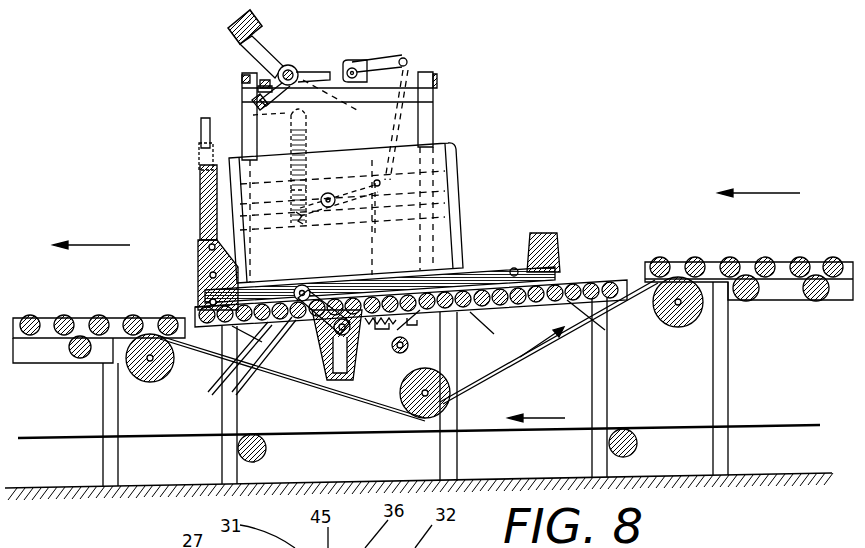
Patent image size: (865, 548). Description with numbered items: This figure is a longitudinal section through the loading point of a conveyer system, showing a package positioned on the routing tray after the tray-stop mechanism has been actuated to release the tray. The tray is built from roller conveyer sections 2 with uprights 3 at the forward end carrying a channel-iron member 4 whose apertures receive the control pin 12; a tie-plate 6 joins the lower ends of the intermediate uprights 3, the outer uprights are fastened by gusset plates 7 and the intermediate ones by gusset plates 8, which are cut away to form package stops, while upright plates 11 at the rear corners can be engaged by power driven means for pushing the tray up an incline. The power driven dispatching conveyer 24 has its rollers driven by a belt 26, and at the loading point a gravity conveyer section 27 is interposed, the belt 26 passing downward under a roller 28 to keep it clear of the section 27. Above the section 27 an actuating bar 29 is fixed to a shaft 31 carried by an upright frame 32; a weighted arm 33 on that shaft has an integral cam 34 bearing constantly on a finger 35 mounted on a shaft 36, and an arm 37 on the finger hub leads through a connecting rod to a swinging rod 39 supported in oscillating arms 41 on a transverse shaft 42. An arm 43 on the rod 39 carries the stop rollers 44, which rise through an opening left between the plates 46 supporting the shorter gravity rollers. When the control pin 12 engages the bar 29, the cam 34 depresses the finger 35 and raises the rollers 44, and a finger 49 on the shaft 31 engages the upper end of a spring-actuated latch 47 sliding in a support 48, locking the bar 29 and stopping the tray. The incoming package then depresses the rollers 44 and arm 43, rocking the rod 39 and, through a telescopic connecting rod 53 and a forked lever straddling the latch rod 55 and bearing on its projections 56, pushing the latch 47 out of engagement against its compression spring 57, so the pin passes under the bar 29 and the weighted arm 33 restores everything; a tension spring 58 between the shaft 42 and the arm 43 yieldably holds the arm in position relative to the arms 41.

The roller conveyer section 2 is at (514, 268).
The upright 3 is at (200, 178).
The member of channel iron 4 is at (211, 152).
The tie-plate 6 is at (198, 249).
The gusset plate 7 is at (260, 285).
The gusset plate 8 is at (200, 268).
The upright plate 11 is at (545, 232).
The control pin 12 is at (200, 126).
The dispatching conveyer 24 is at (60, 345).
The belt 26 is at (665, 322).
The gravity conveyer section 27 is at (580, 280).
The roller 28 is at (450, 394).
The actuating bar 29 is at (262, 98).
The shaft 31 is at (292, 65).
The upright frame 32 is at (428, 97).
The weighted arm 33 is at (246, 50).
The cam 34 is at (318, 72).
The finger 35 is at (342, 101).
The shaft 36 is at (352, 65).
The arm 37 is at (370, 64).
The swinging rod 39 is at (323, 344).
The oscillating arm 41 is at (333, 365).
The shaft 42 is at (412, 347).
The arm 43 is at (330, 300).
The stop roller 44 is at (312, 285).
The plate 46 is at (232, 392).
The spring-actuated latch 47 is at (224, 376).
The support 48 is at (330, 182).
The finger 49 is at (252, 115).
The telescopic connecting rod 53 is at (462, 185).
The latch rod 55 is at (240, 204).
The projection 56 is at (240, 230).
The compression spring 57 is at (240, 184).
The tension spring 58 is at (380, 343).